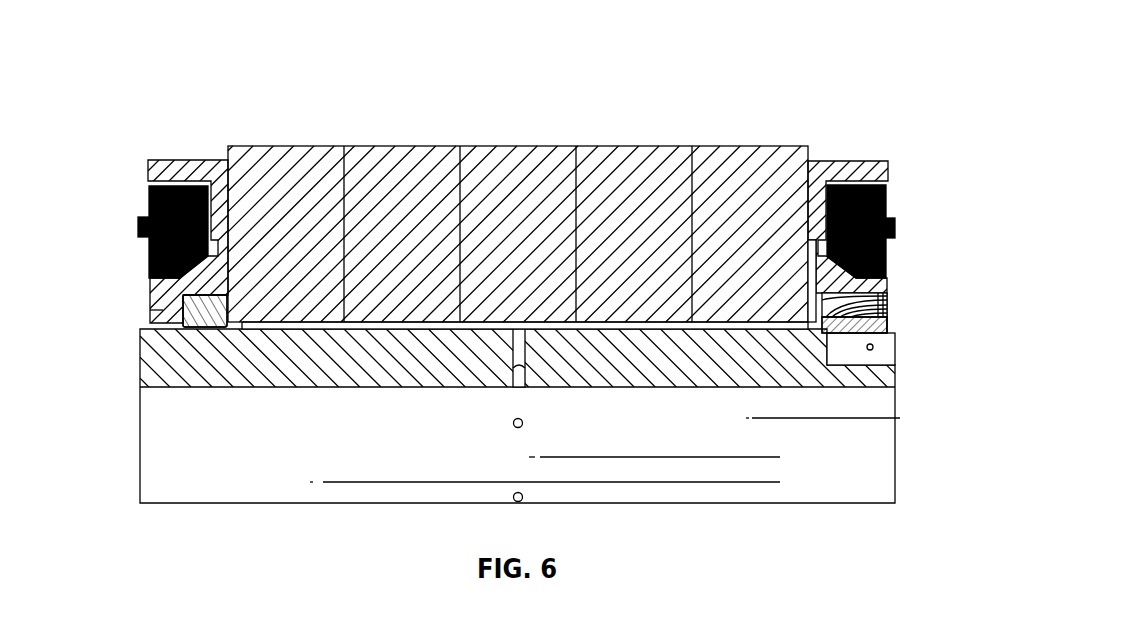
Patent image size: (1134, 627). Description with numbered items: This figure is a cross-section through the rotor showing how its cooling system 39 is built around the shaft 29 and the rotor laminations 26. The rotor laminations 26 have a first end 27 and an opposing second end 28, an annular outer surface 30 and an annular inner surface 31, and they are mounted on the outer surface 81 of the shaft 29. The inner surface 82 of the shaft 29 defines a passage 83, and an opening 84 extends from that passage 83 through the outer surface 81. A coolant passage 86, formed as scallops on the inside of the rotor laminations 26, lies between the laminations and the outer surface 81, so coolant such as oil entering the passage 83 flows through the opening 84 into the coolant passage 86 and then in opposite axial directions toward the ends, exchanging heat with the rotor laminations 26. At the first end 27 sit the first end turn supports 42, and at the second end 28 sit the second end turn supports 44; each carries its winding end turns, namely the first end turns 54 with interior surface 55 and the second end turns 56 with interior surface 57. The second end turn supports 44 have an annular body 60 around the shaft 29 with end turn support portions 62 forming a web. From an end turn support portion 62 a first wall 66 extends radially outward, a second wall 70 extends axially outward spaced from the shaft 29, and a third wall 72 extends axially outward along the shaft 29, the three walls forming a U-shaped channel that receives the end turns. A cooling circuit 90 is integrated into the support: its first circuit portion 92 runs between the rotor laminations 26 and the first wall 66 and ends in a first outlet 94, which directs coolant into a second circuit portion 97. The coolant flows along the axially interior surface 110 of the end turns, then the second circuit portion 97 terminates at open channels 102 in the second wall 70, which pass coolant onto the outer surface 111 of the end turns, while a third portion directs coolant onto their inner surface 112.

The rotor laminations 26 is at (633, 166).
The first end 27 is at (227, 150).
The second end 28 is at (810, 162).
The shaft 29 is at (840, 381).
The annular outer surface 30 is at (381, 146).
The annular inner surface 31 is at (277, 327).
The cooling system 39 is at (891, 290).
The first end turn supports 42 is at (146, 157).
The second end turn supports 44 is at (893, 156).
The first end turns 54 is at (162, 210).
The interior surface 55 is at (168, 281).
The second end turns 56 is at (879, 212).
The interior surface 57 is at (887, 262).
The annular body 60 is at (894, 340).
The end turn support portions 62 is at (862, 330).
The first wall 66 is at (824, 205).
The second wall 70 is at (866, 160).
The third wall 72 is at (884, 285).
The outer surface 81 is at (697, 325).
The inner surface 82 is at (625, 432).
The passage 83 is at (300, 444).
The opening 84 is at (527, 366).
The coolant passage 86 is at (387, 327).
The cooling circuit 90 is at (801, 239).
The first circuit portion 92 is at (811, 256).
The first outlet 94 is at (820, 247).
The second circuit portion 97 is at (817, 226).
The open channels 102 is at (894, 183).
The axially interior surface 110 is at (824, 192).
The outer surface 111 is at (858, 178).
The inner surface 112 is at (811, 283).